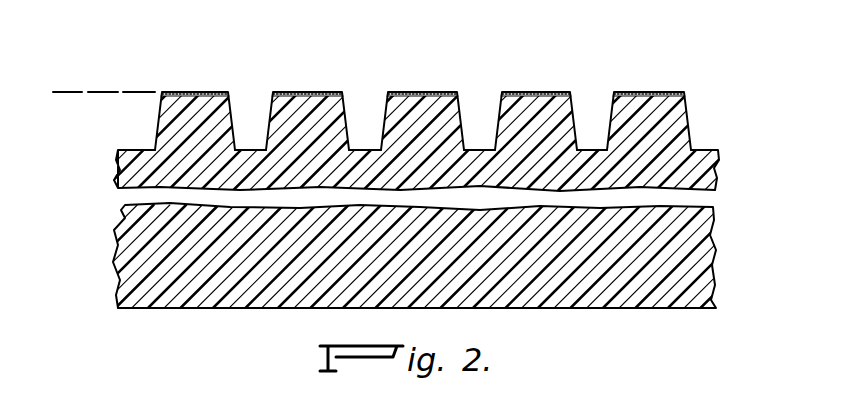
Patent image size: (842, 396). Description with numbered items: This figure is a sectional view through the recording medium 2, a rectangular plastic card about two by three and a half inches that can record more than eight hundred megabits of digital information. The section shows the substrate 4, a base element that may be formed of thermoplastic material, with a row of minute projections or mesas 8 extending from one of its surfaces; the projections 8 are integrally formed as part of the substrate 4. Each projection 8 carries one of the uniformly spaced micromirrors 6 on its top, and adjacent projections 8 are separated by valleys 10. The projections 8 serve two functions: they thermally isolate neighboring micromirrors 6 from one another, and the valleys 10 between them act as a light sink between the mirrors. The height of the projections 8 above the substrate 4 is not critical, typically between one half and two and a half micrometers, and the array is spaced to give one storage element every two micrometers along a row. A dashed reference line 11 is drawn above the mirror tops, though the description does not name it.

The recording medium 2 is at (700, 116).
The substrate 4 is at (122, 174).
The micromirrors 6 is at (207, 92).
The projections 8 is at (158, 108).
The valleys 10 is at (247, 116).
The reference plane 11 is at (108, 90).